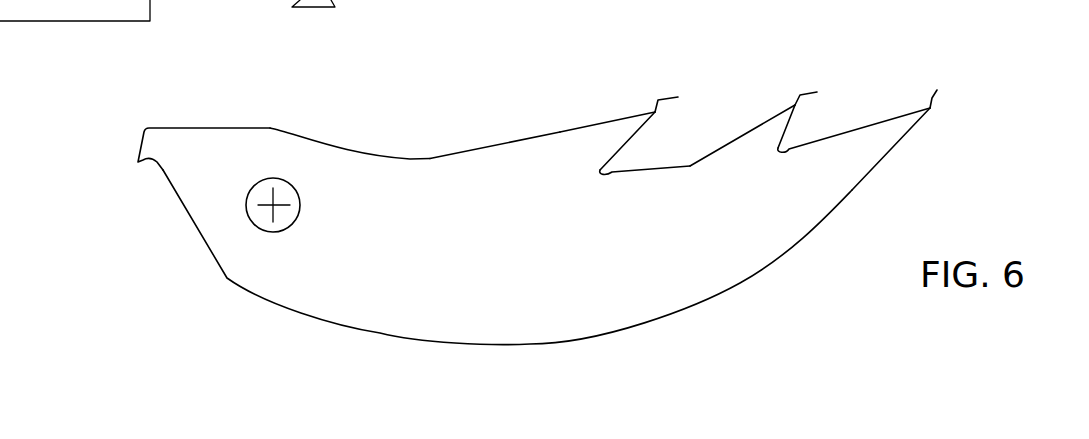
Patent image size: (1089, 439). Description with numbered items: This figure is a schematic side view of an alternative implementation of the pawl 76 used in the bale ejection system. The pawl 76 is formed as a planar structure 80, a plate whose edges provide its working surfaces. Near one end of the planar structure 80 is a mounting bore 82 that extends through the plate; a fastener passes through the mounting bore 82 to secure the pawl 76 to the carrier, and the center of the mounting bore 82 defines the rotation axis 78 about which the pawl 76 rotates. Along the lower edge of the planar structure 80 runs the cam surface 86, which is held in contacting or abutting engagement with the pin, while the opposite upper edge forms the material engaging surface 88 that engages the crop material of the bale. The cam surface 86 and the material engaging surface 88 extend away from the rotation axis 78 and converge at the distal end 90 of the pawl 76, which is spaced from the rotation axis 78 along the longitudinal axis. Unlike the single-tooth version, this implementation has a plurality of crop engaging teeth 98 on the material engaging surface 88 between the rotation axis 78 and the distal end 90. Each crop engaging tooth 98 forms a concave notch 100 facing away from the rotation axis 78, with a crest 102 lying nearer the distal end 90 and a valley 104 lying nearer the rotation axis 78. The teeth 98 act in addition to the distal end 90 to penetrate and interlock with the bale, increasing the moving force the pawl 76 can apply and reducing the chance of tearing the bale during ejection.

The pawl 76 is at (460, 147).
The rotation axis 78 is at (280, 210).
The planar structure 80 is at (403, 263).
The mounting bore 82 is at (288, 185).
The cam surface 86 is at (705, 297).
The material engaging surface 88 is at (527, 137).
The distal end 90 is at (937, 90).
The crop engaging tooth 98 is at (621, 118).
The concave notch 100 is at (627, 163).
The crest 102 is at (678, 97).
The valley 104 is at (603, 172).